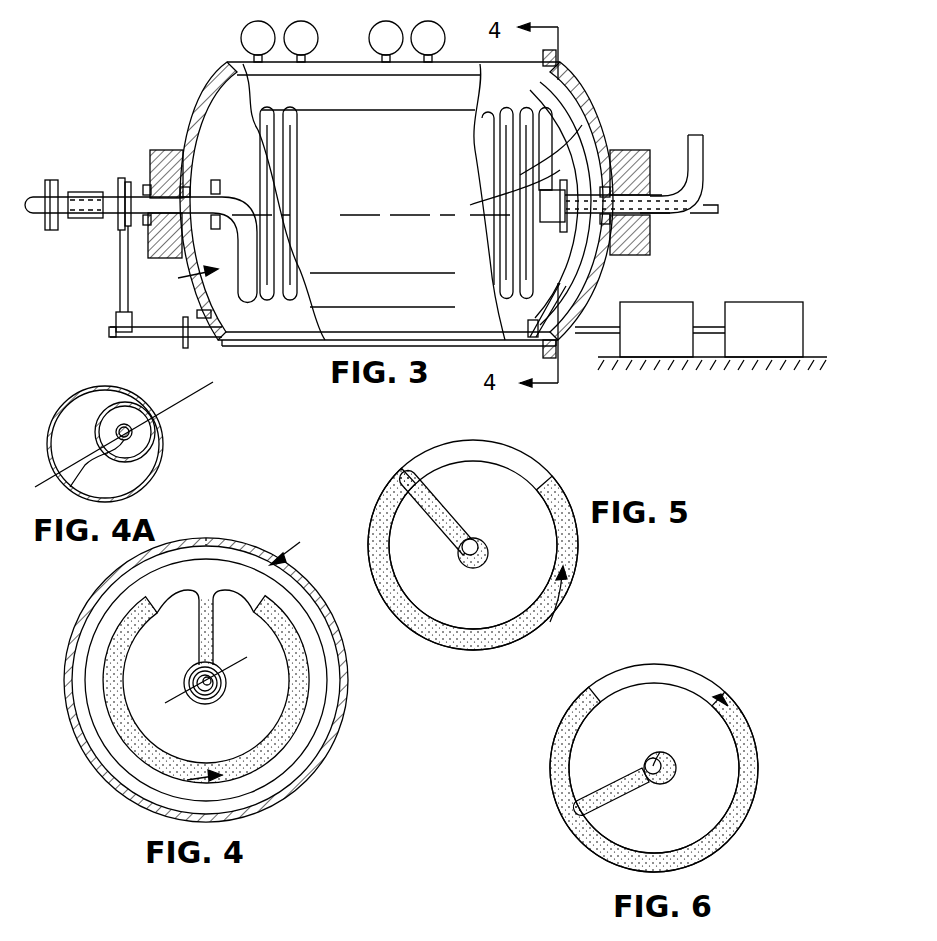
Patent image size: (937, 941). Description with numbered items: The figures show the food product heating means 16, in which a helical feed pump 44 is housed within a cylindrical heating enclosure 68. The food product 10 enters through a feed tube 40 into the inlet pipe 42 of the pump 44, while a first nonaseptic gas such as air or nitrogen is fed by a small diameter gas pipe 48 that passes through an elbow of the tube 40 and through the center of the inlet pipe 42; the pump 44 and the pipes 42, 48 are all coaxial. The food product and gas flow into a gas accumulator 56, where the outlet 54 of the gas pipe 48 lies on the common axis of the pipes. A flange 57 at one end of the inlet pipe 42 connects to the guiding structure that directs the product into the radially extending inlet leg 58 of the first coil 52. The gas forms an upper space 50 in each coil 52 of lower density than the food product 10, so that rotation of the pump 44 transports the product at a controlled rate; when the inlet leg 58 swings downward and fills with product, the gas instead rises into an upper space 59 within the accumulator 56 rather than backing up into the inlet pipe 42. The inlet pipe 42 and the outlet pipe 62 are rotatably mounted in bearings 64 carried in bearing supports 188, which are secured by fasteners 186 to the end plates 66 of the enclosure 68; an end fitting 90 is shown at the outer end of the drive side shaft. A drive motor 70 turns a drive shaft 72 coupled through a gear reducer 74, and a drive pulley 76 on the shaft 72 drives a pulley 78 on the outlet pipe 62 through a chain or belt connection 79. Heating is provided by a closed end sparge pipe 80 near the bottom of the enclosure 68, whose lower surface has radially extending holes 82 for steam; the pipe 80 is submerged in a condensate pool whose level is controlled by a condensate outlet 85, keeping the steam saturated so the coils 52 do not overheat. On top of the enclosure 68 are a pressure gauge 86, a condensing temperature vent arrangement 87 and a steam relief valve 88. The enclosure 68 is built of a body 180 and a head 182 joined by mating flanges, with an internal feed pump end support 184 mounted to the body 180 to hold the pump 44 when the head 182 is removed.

In FIG. 4, the food product 10 is at (318, 684).
In FIG. 5, the food product 10 is at (457, 640).
In FIG. 6, the food product 10 is at (747, 820).
In FIG. 3, the food product heating means 16 is at (437, 178).
In FIG. 3, the feed tube 40 is at (703, 155).
In FIG. 3, the inlet pipe 42 is at (652, 222).
In FIG. 4A, the inlet pipe 42 is at (68, 488).
In FIG. 4, the inlet pipe 42 is at (195, 698).
In FIG. 3, the helical feed pump 44 is at (182, 276).
In FIG. 4, the helical feed pump 44 is at (297, 542).
In FIG. 3, the gas pipe 48 is at (700, 205).
In FIG. 4A, the gas pipe 48 is at (133, 432).
In FIG. 4, the gas pipe 48 is at (193, 675).
In FIG. 5, the gas pipe 48 is at (490, 554).
In FIG. 6, the gas pipe 48 is at (667, 784).
In FIG. 4, the upper space 50 is at (228, 540).
In FIG. 5, the upper space 50 is at (517, 460).
In FIG. 6, the upper space 50 is at (707, 678).
In FIG. 3, the first coil 52 is at (503, 112).
In FIG. 4, the first coil 52 is at (302, 630).
In FIG. 5, the first coil 52 is at (418, 458).
In FIG. 6, the first coil 52 is at (618, 675).
In FIG. 3, the outlet 54 is at (540, 230).
In FIG. 3, the gas accumulator 56 is at (565, 224).
In FIG. 4A, the gas accumulator 56 is at (67, 398).
In FIG. 4, the gas accumulator 56 is at (214, 702).
In FIG. 5, the gas accumulator 56 is at (483, 568).
In FIG. 6, the gas accumulator 56 is at (678, 768).
In FIG. 4A, the flange 57 is at (203, 390).
In FIG. 4, the flange 57 is at (232, 657).
In FIG. 3, the inlet leg 58 is at (565, 160).
In FIG. 4, the inlet leg 58 is at (214, 648).
In FIG. 5, the inlet leg 58 is at (447, 524).
In FIG. 6, the inlet leg 58 is at (618, 779).
In FIG. 6, the upper space 59 is at (665, 750).
In FIG. 3, the outlet pipe 62 is at (200, 196).
In FIG. 3, the bearings 64 is at (173, 227).
In FIG. 3, the end plates 66 is at (208, 96).
In FIG. 3, the heating enclosure 68 is at (335, 63).
In FIG. 4, the heating enclosure 68 is at (320, 775).
In FIG. 3, the drive motor 70 is at (760, 302).
In FIG. 3, the drive shaft 72 is at (707, 327).
In FIG. 3, the gear reducer 74 is at (667, 310).
In FIG. 3, the drive pulley 76 is at (117, 318).
In FIG. 3, the pulley 78 is at (118, 180).
In FIG. 3, the chain or belt connection 79 is at (120, 282).
In FIG. 3, the sparge pipe 80 is at (200, 338).
In FIG. 3, the holes 82 is at (273, 345).
In FIG. 3, the condensate outlet 85 is at (198, 313).
In FIG. 3, the pressure gauge 86 is at (318, 44).
In FIG. 3, the condensing temperature vent arrangement 87 is at (400, 26).
In FIG. 3, the steam relief valve 88 is at (445, 38).
In FIG. 3, the nut 90 is at (47, 182).
In FIG. 3, the body 180 is at (390, 154).
In FIG. 3, the head 182 is at (588, 93).
In FIG. 3, the internal feed pump end support 184 is at (578, 128).
In FIG. 3, the bolt 186 is at (190, 185).
In FIG. 3, the bearing supports 188 is at (157, 135).